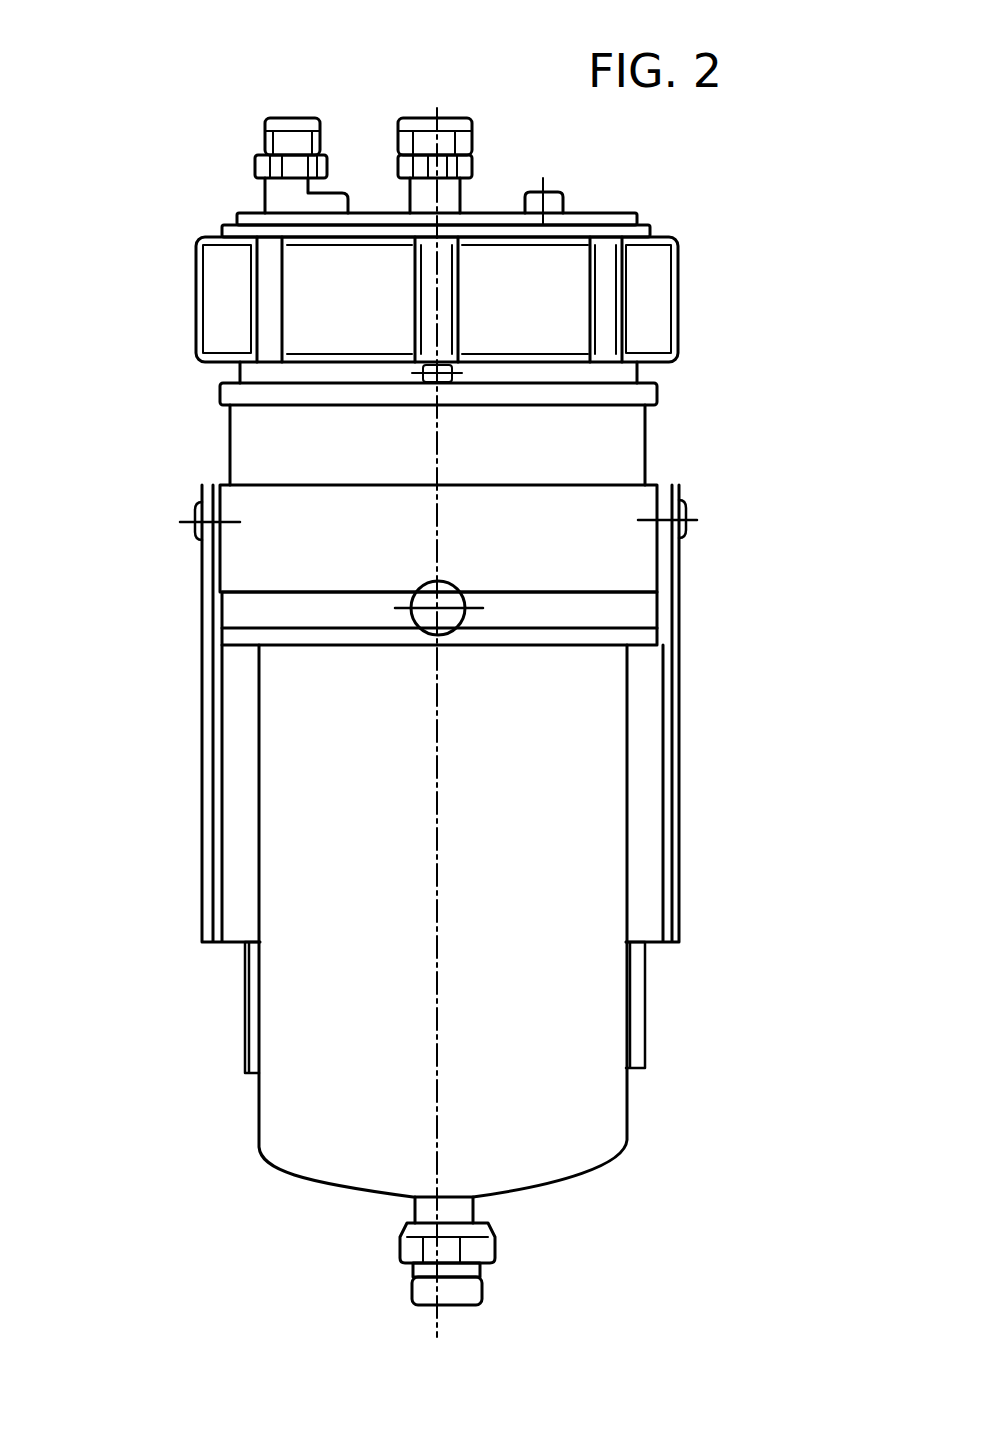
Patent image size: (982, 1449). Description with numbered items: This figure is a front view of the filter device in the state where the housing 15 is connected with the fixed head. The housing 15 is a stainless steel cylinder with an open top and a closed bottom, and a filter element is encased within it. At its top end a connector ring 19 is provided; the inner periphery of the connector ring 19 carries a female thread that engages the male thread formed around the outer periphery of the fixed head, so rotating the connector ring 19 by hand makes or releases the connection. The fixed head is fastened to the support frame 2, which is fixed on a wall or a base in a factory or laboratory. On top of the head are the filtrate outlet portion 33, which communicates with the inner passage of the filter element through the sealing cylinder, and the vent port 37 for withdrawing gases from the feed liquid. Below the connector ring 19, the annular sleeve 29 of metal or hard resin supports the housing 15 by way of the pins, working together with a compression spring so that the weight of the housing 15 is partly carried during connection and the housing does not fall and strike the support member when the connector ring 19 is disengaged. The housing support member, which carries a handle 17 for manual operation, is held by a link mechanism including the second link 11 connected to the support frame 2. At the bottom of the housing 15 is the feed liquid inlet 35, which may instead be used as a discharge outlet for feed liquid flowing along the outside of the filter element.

The support frame 2 is at (642, 975).
The second link 11 is at (679, 739).
The housing 15 is at (613, 1120).
The handle 17 is at (456, 630).
The connector ring 19 is at (688, 282).
The annular sleeve 29 is at (648, 433).
The filtrate outlet portion 33 is at (433, 117).
The feed liquid inlet 35 is at (488, 1275).
The vent port 37 is at (280, 112).